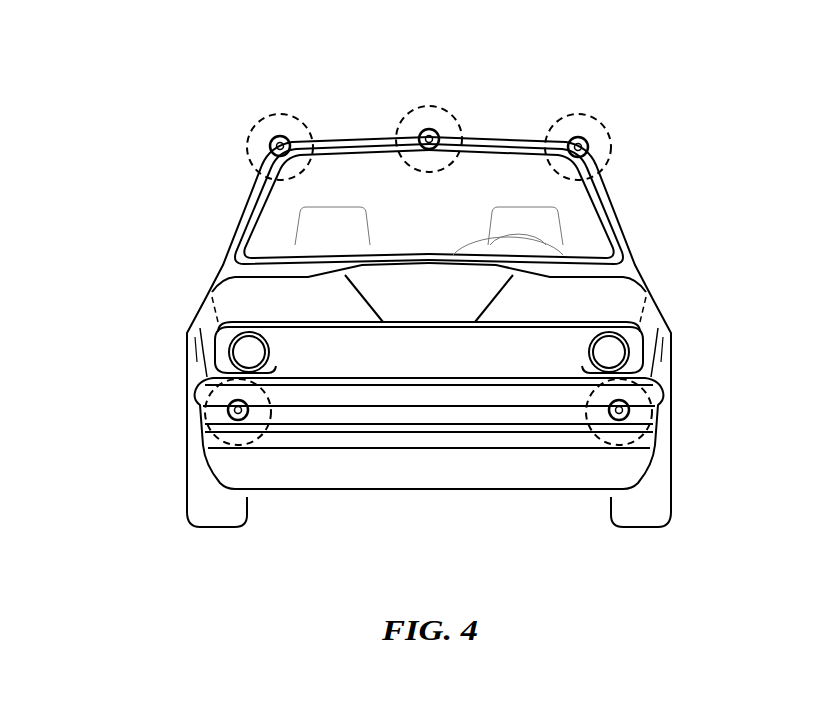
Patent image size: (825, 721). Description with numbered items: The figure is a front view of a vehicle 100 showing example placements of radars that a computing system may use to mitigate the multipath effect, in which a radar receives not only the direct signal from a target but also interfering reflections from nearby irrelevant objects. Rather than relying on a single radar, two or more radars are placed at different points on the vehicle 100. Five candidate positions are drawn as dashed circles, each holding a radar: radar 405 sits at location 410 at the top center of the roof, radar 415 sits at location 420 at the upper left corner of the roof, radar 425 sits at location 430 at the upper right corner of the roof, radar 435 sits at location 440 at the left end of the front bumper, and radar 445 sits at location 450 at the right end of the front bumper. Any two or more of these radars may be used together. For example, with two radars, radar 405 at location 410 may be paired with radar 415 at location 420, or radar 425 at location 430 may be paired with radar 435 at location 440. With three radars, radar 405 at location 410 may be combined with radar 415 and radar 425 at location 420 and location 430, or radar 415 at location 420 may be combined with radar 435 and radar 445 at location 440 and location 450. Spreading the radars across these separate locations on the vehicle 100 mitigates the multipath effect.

The vehicle 100 is at (222, 263).
The radar 405 is at (437, 133).
The location 410 is at (423, 106).
The radar 415 is at (270, 146).
The location 420 is at (265, 118).
The radar 425 is at (588, 146).
The location 430 is at (593, 117).
The radar 435 is at (246, 417).
The location 440 is at (217, 438).
The radar 445 is at (612, 417).
The location 450 is at (640, 440).